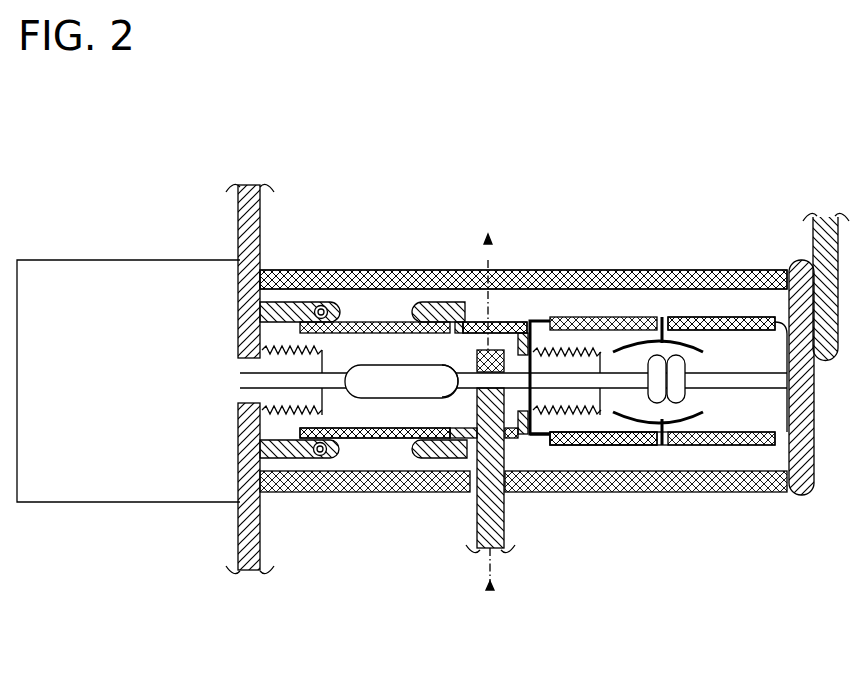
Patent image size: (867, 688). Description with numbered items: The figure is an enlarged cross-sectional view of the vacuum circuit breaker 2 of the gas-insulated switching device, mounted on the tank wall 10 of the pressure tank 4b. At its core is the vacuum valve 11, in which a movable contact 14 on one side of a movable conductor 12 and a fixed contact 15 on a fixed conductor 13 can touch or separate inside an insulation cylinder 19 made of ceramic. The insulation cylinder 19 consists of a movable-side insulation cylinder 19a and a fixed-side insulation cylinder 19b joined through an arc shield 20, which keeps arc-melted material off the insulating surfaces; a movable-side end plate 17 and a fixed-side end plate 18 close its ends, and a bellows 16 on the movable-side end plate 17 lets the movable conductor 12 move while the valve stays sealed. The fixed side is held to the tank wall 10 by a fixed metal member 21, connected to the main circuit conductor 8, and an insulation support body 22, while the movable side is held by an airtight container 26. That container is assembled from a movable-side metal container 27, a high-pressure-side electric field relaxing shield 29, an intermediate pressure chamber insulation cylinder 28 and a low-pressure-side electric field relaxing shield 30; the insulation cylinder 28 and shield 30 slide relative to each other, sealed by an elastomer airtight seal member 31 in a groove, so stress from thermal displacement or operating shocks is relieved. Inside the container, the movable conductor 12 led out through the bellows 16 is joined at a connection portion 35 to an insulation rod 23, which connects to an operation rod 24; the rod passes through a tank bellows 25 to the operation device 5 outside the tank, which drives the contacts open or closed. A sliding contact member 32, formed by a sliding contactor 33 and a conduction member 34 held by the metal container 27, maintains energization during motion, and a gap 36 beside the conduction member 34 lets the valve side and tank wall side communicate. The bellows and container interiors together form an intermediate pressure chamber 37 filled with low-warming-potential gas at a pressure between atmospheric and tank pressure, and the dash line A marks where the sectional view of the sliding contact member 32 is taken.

The vacuum circuit breaker 2 is at (648, 195).
The pressure tank 4b is at (236, 231).
The operation device 5 is at (130, 470).
The main circuit conductor 8 is at (806, 250).
The tank wall 10 is at (240, 510).
The vacuum valve 11 is at (602, 492).
The movable conductor 12 is at (607, 316).
The fixed conductor 13 is at (706, 380).
The movable contact 14 is at (658, 316).
The fixed contact 15 is at (690, 368).
The bellows 16 is at (578, 447).
The movable-side end plate 17 is at (547, 446).
The fixed-side end plate 18 is at (786, 447).
The insulation cylinder 19 is at (595, 575).
The movable-side insulation cylinder 19a is at (657, 450).
The fixed-side insulation cylinder 19b is at (672, 447).
The arc shield 20 is at (693, 447).
The fixed metal member 21 is at (800, 497).
The insulation support body 22 is at (410, 382).
The insulation rod 23 is at (362, 350).
The operation rod 24 is at (240, 372).
The tank bellows 25 is at (296, 456).
The airtight container 26 is at (305, 580).
The movable-side metal container 27 is at (460, 440).
The intermediate pressure chamber insulation cylinder 28 is at (370, 440).
The high-pressure-side electric field relaxing shield 29 is at (435, 460).
The low-pressure-side electric field relaxing shield 30 is at (300, 462).
The airtight seal member 31 is at (291, 304).
The sliding contact member 32 is at (445, 204).
The sliding contactor 33 is at (497, 321).
The conduction member 34 is at (483, 321).
The connection portion 35 is at (445, 391).
The gap 36 is at (476, 343).
The intermediate pressure chamber 37 is at (318, 305).
The alternate long and short dash line A- A is at (489, 423).